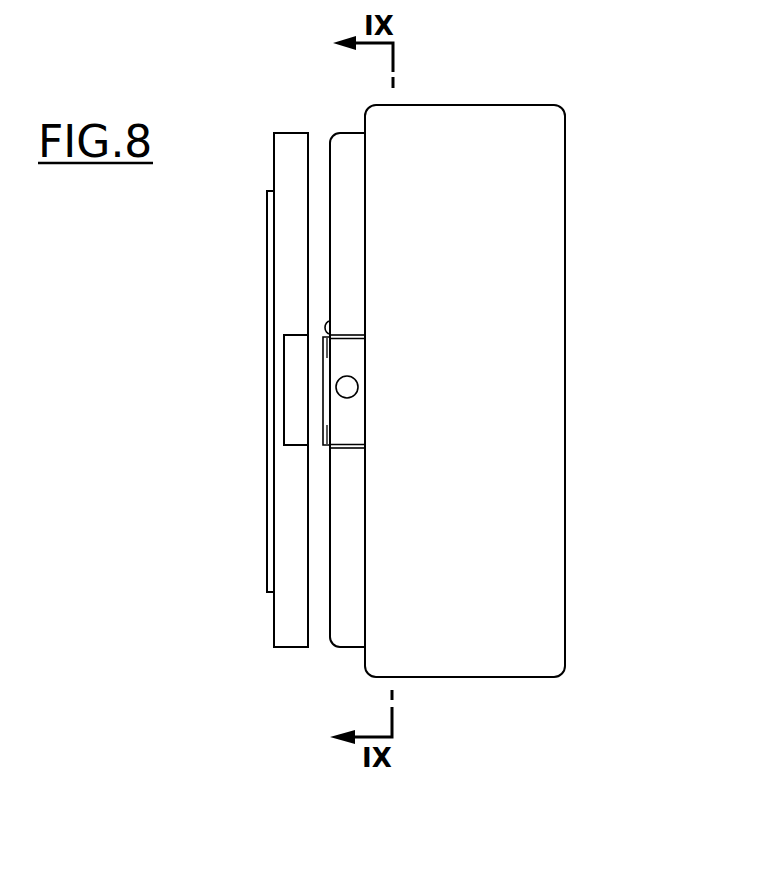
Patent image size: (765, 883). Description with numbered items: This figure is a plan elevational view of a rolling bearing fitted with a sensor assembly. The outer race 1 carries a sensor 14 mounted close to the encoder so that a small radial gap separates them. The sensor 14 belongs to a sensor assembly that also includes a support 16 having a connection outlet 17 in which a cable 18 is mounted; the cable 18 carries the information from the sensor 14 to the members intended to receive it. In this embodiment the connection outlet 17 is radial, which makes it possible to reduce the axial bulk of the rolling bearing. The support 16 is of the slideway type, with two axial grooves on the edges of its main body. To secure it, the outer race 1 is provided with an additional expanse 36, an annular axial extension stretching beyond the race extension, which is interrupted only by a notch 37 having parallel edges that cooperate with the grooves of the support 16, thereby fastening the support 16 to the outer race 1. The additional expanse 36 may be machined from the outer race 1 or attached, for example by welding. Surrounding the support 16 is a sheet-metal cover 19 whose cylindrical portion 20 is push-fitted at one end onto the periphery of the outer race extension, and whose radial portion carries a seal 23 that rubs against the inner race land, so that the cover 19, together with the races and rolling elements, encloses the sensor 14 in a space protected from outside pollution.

The outer race 1 is at (503, 310).
The sensor 14 is at (280, 377).
The support 16 is at (375, 426).
The connection outlet 17 is at (350, 433).
The cable 18 is at (347, 387).
The cover 19 is at (262, 469).
The cylindrical portion 20 is at (290, 297).
The seal 23 is at (270, 415).
The additional expanse 36 is at (347, 283).
The notch 37 is at (326, 320).